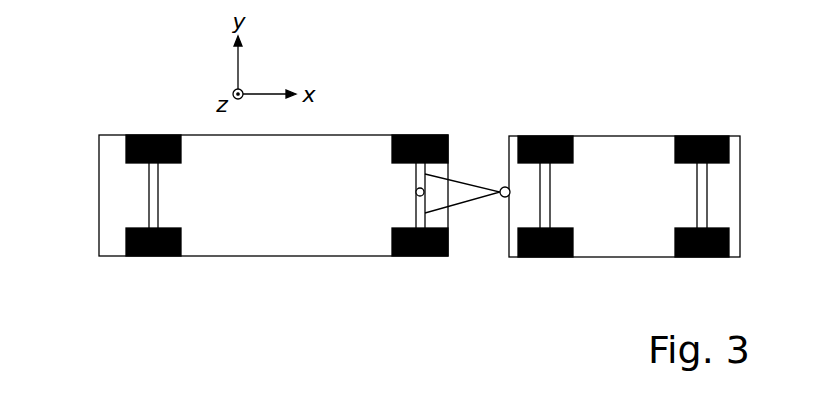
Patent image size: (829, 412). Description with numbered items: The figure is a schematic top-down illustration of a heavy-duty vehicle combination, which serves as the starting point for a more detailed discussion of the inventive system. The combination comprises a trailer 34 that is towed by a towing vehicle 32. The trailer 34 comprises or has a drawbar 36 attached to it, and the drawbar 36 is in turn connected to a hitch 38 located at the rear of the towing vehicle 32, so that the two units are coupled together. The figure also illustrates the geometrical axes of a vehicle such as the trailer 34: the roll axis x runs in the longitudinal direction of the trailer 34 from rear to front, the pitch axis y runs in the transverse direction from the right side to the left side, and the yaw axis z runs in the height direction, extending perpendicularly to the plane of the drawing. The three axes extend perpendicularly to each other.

The towing vehicle 32 is at (662, 136).
The trailer 34 is at (363, 135).
The drawbar 36 is at (458, 206).
The hitch 38 is at (504, 187).